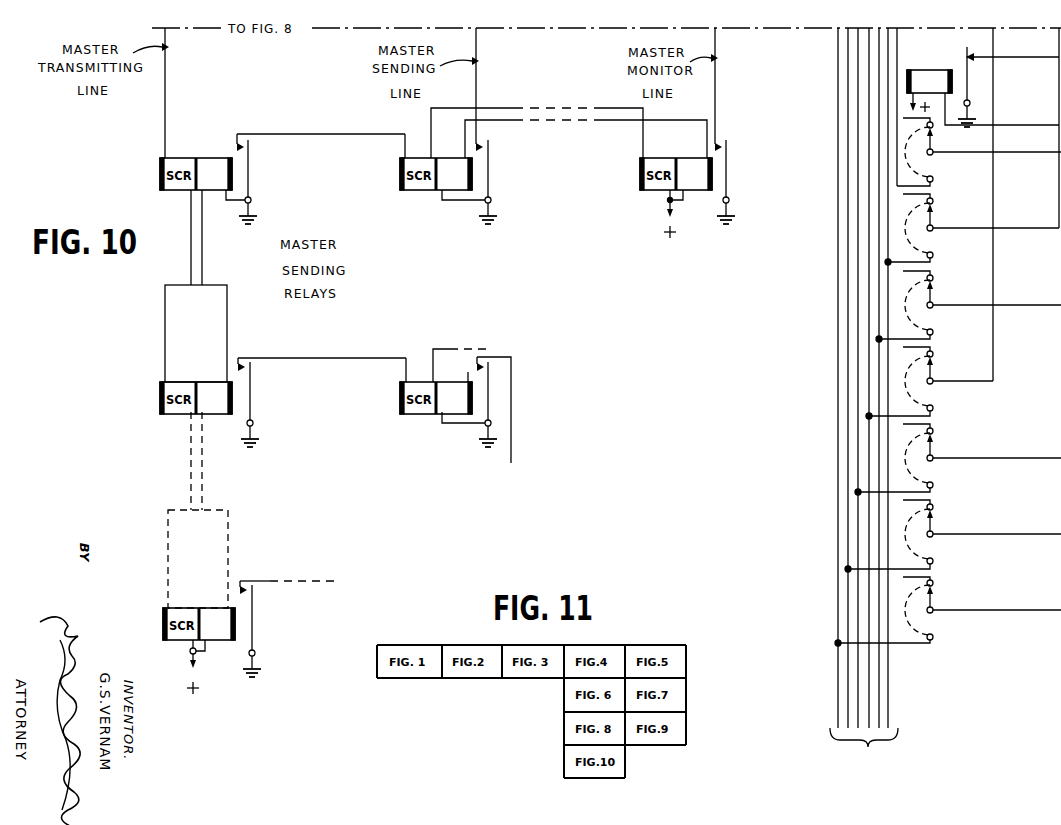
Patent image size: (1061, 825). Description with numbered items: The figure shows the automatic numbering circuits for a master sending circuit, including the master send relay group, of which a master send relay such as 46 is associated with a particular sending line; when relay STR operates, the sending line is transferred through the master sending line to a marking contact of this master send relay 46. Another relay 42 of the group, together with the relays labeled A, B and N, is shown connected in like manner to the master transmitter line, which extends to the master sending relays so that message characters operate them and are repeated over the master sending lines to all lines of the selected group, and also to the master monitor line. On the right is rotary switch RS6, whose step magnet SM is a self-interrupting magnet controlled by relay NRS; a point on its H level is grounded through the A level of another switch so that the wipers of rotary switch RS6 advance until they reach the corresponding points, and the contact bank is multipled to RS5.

The master send relay 46 is at (426, 190).
The master monitor relay SCR-7 42 is at (658, 190).
The A level A is at (282, 179).
The relay SCR B is at (283, 402).
The relay SCR N is at (249, 637).
The step magnet SM is at (983, 97).
The rotary switch RS6 is at (948, 382).
The multiple to rotary switch RS5 is at (864, 404).